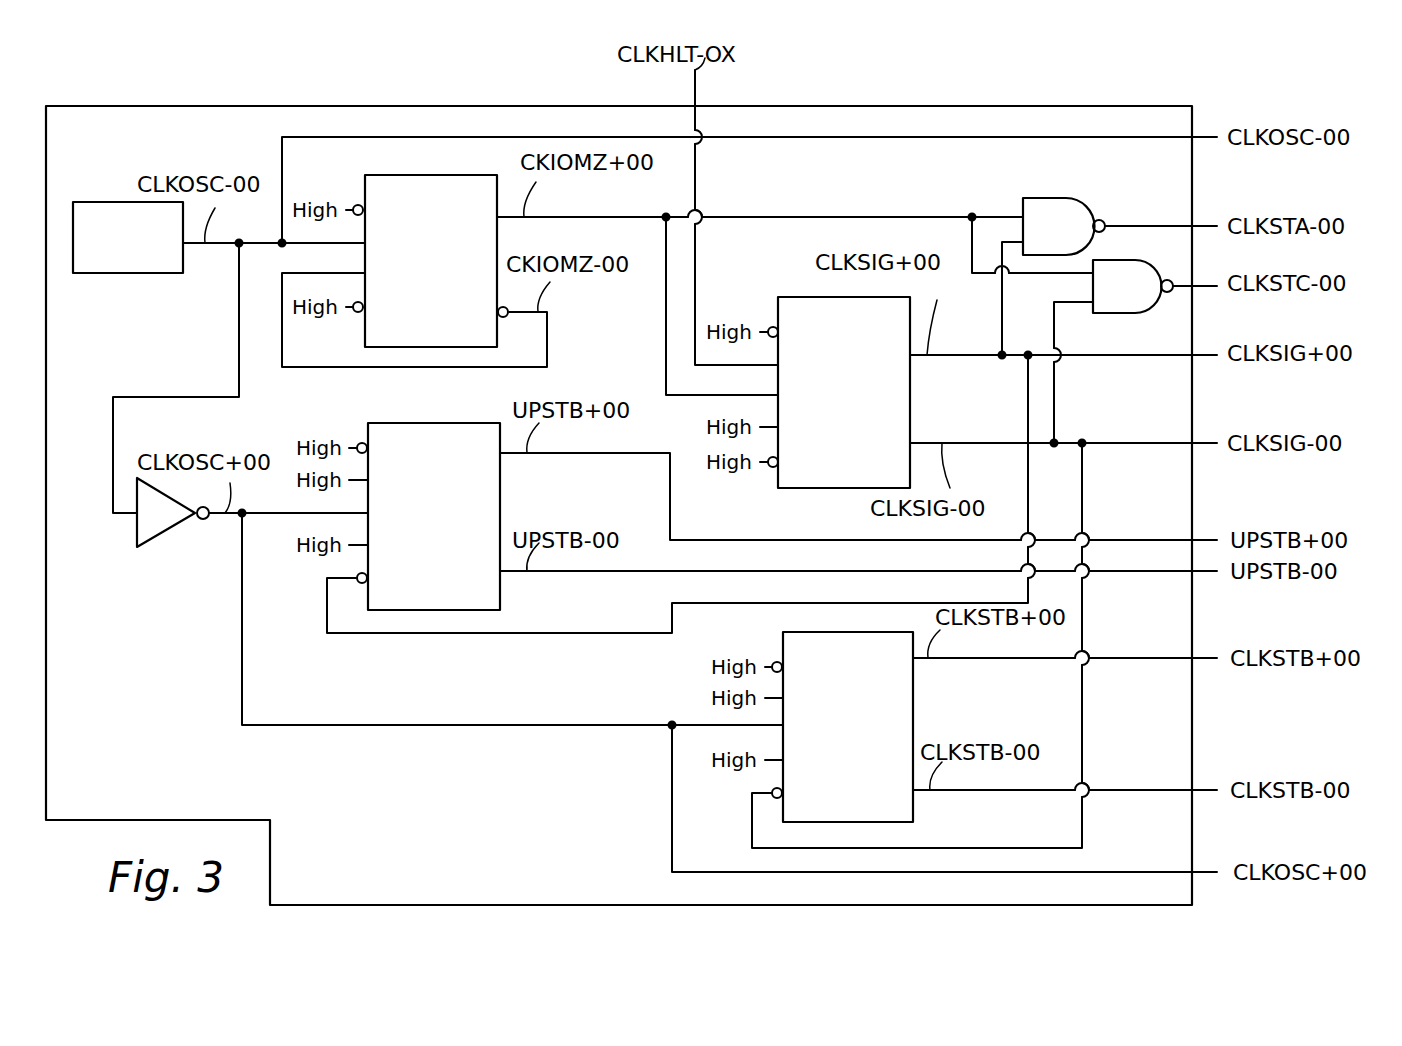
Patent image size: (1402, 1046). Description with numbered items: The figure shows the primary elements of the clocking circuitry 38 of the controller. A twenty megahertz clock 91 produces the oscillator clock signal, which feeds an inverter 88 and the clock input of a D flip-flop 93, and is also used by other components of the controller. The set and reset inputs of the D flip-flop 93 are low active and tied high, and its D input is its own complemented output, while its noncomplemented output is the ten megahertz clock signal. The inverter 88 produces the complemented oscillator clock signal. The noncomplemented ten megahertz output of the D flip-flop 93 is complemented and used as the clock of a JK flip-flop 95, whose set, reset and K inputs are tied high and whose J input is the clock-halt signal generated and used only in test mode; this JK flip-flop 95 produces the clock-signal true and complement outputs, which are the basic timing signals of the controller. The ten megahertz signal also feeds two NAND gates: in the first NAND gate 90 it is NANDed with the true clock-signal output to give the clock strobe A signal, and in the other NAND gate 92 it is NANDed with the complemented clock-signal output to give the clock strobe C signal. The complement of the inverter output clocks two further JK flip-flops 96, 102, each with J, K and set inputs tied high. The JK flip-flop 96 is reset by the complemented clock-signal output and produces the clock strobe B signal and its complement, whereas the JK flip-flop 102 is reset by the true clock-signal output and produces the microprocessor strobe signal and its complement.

The clocking circuitry 38 is at (619, 505).
The inverter 88 is at (173, 512).
The first NAND gate 90 is at (1120, 226).
The 20 megahertz clock 91 is at (140, 273).
The NAND gate 92 is at (1155, 286).
The D flip-flop 93 is at (430, 261).
The JK flip-flop 95 is at (839, 392).
The JK flip-flop 96 is at (842, 727).
The JK flip-flop 102 is at (428, 516).